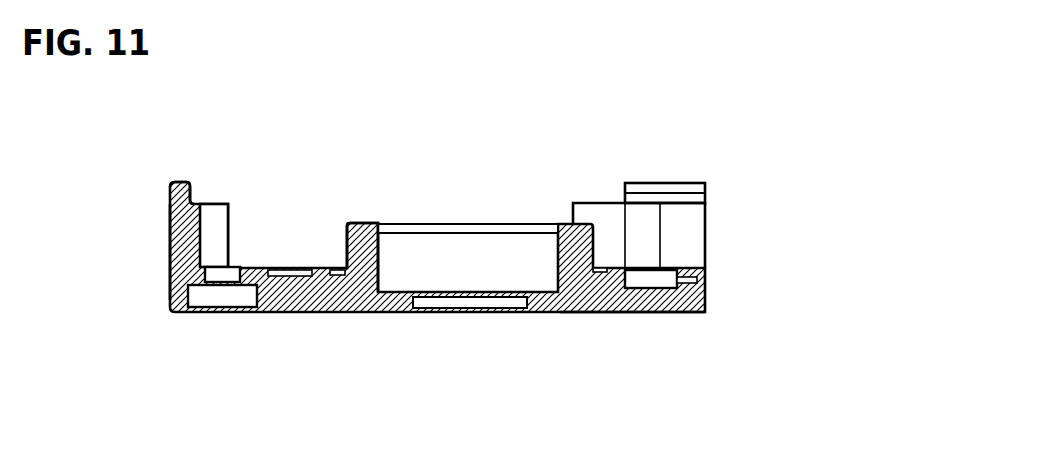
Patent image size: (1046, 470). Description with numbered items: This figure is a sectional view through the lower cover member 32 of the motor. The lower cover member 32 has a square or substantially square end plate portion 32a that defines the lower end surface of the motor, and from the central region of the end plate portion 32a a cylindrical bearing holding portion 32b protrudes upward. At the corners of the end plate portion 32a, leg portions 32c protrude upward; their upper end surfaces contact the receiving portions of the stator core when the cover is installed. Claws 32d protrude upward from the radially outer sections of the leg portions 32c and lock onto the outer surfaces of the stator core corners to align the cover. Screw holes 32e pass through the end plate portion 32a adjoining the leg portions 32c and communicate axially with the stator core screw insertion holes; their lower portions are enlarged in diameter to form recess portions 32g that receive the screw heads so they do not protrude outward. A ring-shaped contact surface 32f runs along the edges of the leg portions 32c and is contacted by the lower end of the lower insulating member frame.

The lower cover member 32 is at (370, 323).
The end plate portion 32a is at (590, 313).
The bearing holding portion 32b is at (340, 245).
The leg portion 32c is at (170, 248).
The claw 32d is at (187, 183).
The screw hole 32e is at (232, 275).
The contact surface 32f is at (700, 261).
The recess portion 32g is at (202, 298).